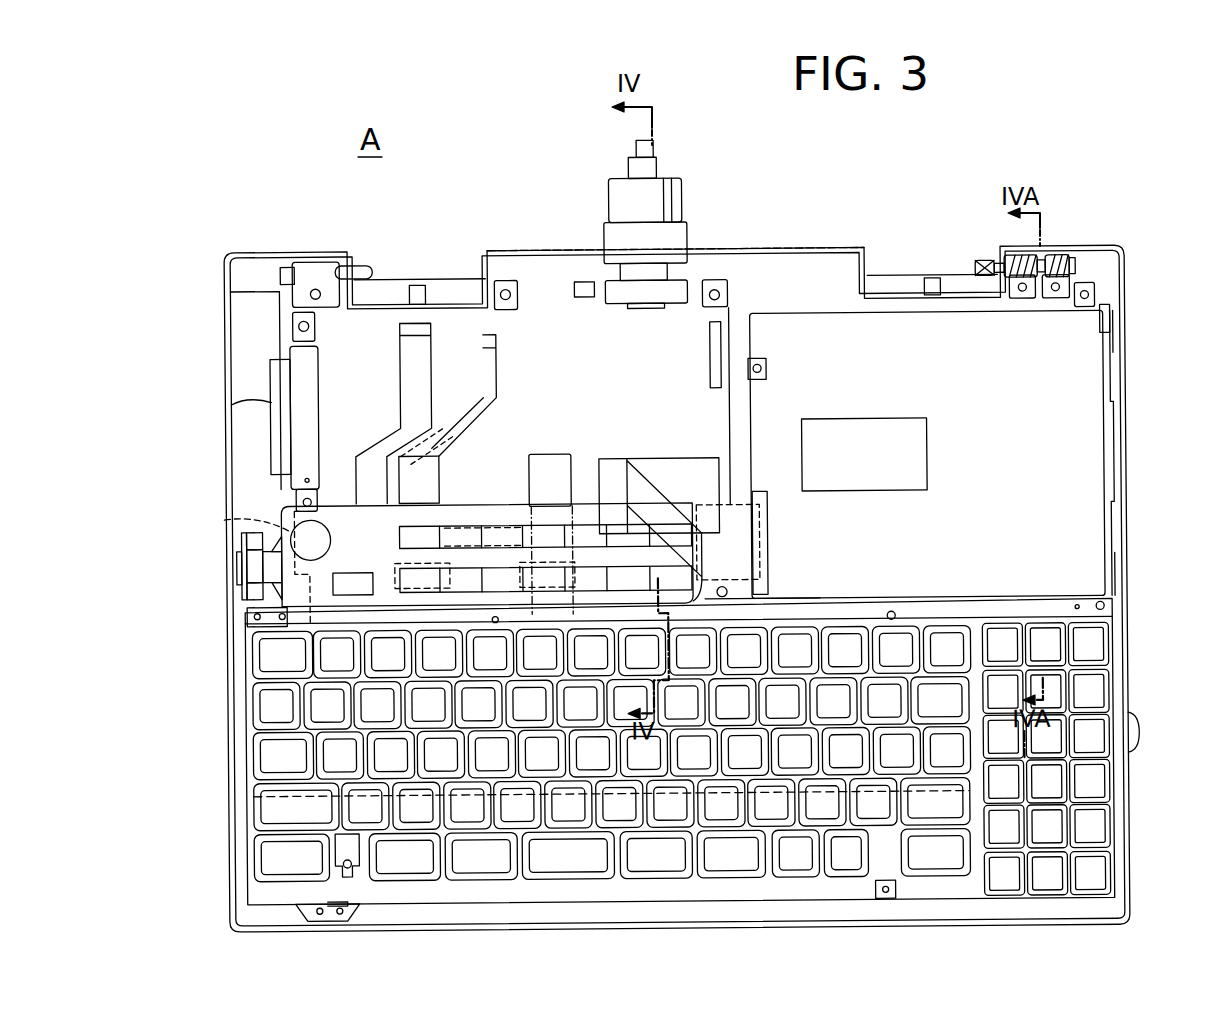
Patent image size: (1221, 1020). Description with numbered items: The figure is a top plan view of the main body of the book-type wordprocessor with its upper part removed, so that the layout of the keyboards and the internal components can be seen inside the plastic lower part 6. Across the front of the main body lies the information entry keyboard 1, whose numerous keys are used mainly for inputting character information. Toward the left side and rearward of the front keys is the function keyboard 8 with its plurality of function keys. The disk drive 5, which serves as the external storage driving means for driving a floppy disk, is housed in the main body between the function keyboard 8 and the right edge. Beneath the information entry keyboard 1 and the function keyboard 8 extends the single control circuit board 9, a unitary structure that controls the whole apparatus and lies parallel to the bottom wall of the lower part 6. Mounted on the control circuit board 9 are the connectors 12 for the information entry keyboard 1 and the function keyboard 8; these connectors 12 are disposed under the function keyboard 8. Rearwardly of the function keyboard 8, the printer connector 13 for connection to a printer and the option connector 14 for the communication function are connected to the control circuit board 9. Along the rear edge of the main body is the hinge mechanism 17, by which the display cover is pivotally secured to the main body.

The information entry keyboard 1 is at (1095, 656).
The disk drive 5 is at (1127, 388).
The lower part 6 is at (1128, 461).
The function keyboard 8 is at (225, 520).
The control circuit board 9 is at (548, 283).
The connectors 12 is at (495, 529).
The printer connector 13 is at (690, 293).
The option connector 14 is at (270, 403).
The hinge mechanism 17 is at (1043, 268).